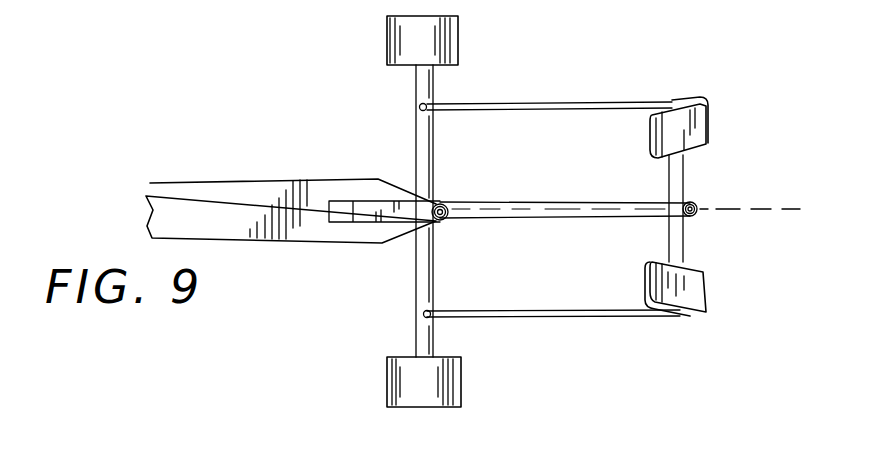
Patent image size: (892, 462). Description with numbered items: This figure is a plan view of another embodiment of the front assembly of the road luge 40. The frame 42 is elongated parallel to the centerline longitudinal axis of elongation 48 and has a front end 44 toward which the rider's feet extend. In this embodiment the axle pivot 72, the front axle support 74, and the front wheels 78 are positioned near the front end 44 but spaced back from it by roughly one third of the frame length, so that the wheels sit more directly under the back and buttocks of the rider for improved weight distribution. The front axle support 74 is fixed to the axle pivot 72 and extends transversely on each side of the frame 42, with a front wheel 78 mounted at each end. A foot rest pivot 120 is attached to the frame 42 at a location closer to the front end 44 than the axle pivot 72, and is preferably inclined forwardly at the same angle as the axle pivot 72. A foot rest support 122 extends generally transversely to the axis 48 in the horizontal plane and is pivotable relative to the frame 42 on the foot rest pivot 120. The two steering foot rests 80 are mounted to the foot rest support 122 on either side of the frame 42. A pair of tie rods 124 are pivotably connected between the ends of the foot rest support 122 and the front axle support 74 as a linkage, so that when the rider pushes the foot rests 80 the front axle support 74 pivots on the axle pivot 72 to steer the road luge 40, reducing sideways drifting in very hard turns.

The road luge 40 is at (268, 147).
The frame 42 is at (227, 182).
The front end 44 is at (638, 202).
The centerline longitudinal axis of elongation 48 is at (790, 208).
The axle pivot 72 is at (444, 220).
The front axle support 74 is at (416, 271).
The front wheels 78 is at (397, 50).
The steering foot rests 80 is at (708, 128).
The foot rest pivot 120 is at (695, 205).
The foot rest support 122 is at (686, 237).
The tie rods 124 is at (584, 102).